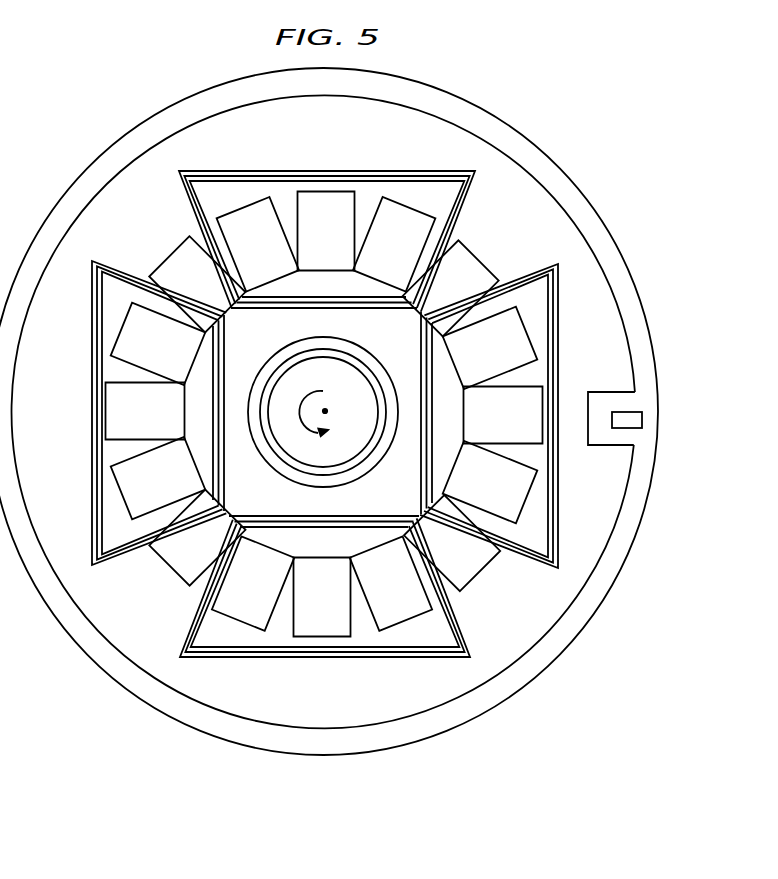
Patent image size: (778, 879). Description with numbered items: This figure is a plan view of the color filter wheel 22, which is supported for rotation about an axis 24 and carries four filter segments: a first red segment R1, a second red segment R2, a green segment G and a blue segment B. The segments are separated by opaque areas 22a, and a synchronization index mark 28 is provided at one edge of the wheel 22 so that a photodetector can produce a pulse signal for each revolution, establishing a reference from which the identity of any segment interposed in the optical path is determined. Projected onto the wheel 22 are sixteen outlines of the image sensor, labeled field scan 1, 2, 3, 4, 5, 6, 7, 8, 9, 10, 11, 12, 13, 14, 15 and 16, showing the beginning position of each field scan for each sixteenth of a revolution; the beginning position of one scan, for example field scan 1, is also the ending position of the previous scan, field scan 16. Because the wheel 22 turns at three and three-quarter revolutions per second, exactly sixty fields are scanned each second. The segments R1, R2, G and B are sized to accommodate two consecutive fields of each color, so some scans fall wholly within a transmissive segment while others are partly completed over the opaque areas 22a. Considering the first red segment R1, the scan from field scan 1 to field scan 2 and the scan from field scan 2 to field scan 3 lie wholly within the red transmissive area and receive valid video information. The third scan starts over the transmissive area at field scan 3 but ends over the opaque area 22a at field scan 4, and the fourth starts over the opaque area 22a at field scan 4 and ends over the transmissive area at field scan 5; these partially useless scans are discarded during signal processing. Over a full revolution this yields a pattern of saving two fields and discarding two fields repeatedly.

The field scan 1 is at (158, 478).
The field scan 2 is at (145, 411).
The field scan 3 is at (158, 344).
The field scan 4 is at (197, 284).
The field scan 5 is at (258, 244).
The field scan 6 is at (326, 231).
The field scan 7 is at (394, 244).
The field scan 8 is at (451, 288).
The field scan 9 is at (490, 348).
The field scan 10 is at (503, 415).
The field scan 11 is at (490, 482).
The field scan 12 is at (452, 543).
The field scan 13 is at (391, 583).
The field scan 14 is at (322, 597).
The field scan 15 is at (253, 583).
The field scan 16 is at (197, 538).
The color filter wheel 22 is at (578, 249).
The opaque areas 22a is at (124, 250).
The axis 24 is at (326, 411).
The synchronization index mark 28 is at (630, 423).
The first red segment R1 is at (105, 452).
The second red segment R2 is at (234, 190).
The green segment G is at (538, 367).
The blue segment B is at (375, 638).